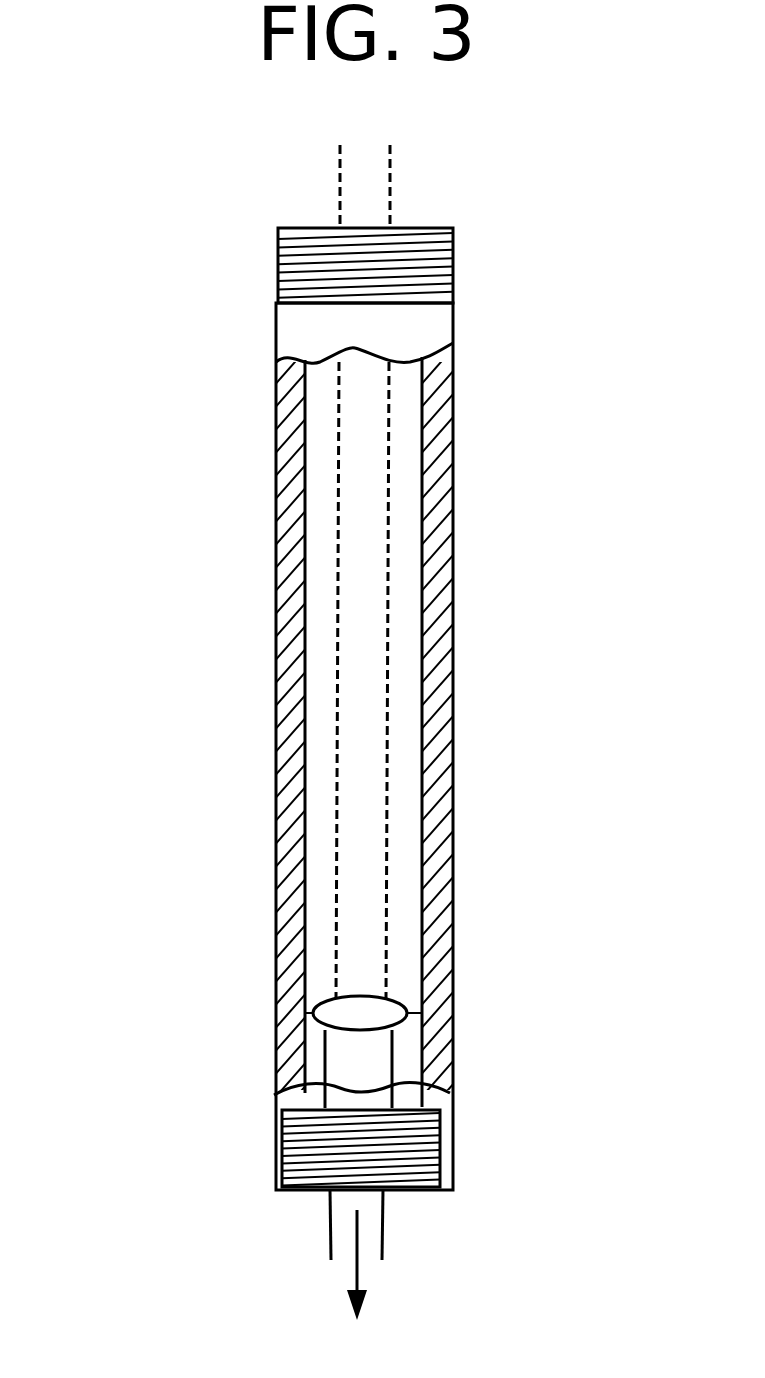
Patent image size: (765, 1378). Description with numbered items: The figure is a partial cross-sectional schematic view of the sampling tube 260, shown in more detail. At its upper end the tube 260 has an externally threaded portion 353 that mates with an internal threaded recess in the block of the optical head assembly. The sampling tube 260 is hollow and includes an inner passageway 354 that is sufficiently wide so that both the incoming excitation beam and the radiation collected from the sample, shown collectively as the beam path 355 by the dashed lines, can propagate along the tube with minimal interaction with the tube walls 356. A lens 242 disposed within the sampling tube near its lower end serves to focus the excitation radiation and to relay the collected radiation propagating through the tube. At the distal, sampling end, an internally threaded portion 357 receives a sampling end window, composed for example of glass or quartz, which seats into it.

The sampling tube 260 is at (227, 500).
The externally threaded portion 353 is at (453, 263).
The inner passageway 354 is at (375, 812).
The beam path 355 is at (378, 618).
The tube walls 356 is at (437, 657).
The lens 242 is at (402, 994).
The internally threaded portion 357 is at (293, 1207).